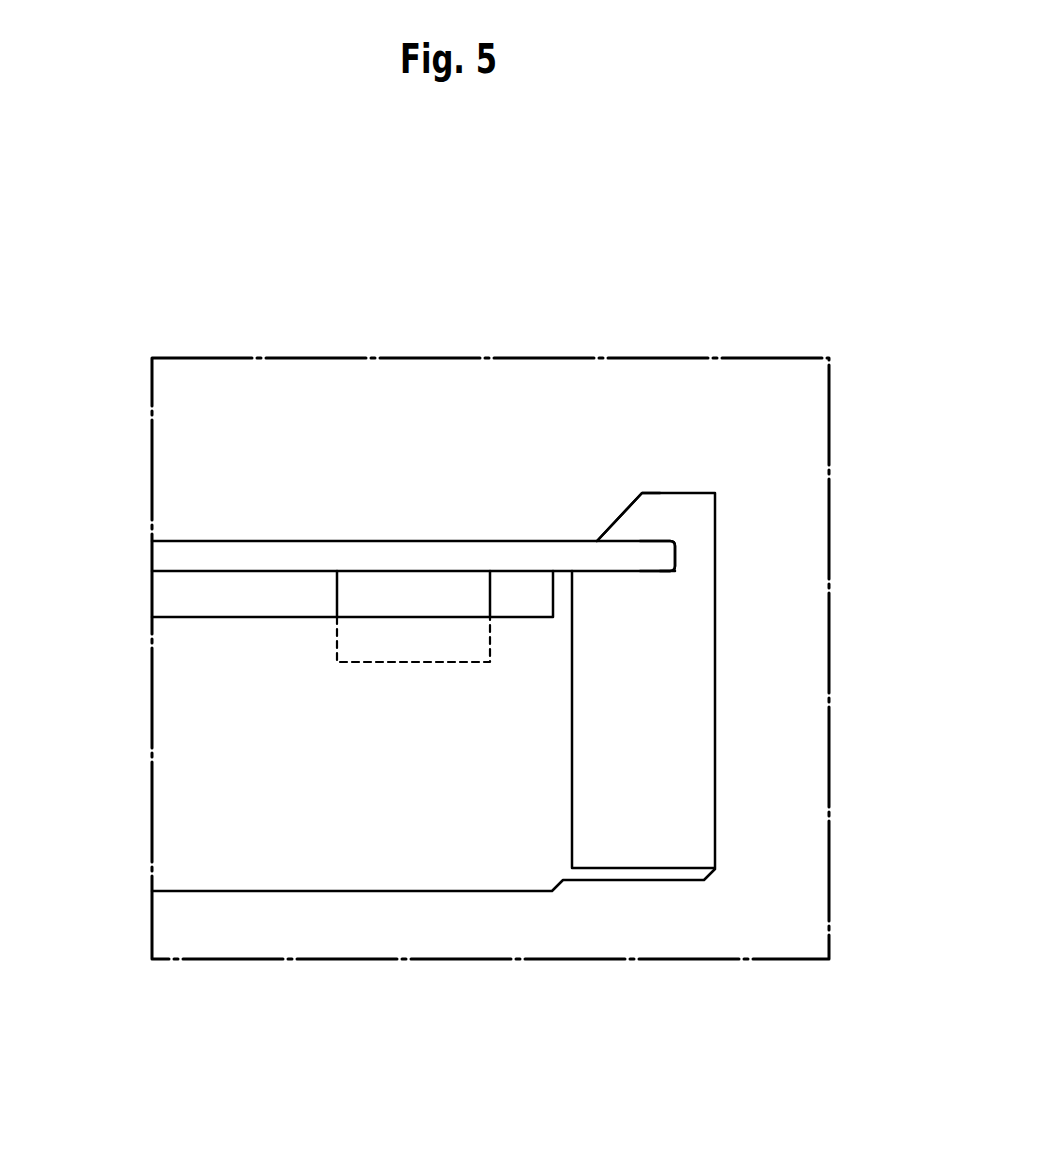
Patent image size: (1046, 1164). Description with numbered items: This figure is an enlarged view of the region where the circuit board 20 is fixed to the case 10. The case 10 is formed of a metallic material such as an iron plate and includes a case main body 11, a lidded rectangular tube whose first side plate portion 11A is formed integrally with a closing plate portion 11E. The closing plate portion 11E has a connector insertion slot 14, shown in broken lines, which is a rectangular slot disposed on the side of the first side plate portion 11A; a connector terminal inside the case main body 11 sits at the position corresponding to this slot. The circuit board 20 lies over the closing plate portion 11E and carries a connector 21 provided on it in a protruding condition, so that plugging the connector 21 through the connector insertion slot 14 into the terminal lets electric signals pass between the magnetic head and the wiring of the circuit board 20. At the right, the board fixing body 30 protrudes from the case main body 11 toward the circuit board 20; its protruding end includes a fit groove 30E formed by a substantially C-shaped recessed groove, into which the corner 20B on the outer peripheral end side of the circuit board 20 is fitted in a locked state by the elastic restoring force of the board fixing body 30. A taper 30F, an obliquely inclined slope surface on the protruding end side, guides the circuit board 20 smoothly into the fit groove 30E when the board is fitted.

The case 10 is at (217, 892).
The case main body 11 is at (310, 870).
The first side plate portion 11A is at (413, 782).
The closing plate portion 11E is at (187, 617).
The connector insertion slot 14 is at (340, 640).
The circuit board 20 is at (212, 555).
The corner 20B is at (655, 555).
The connector 21 is at (430, 585).
The board fixing body 30 is at (660, 838).
The fit groove 30E is at (668, 558).
The taper 30F is at (618, 513).